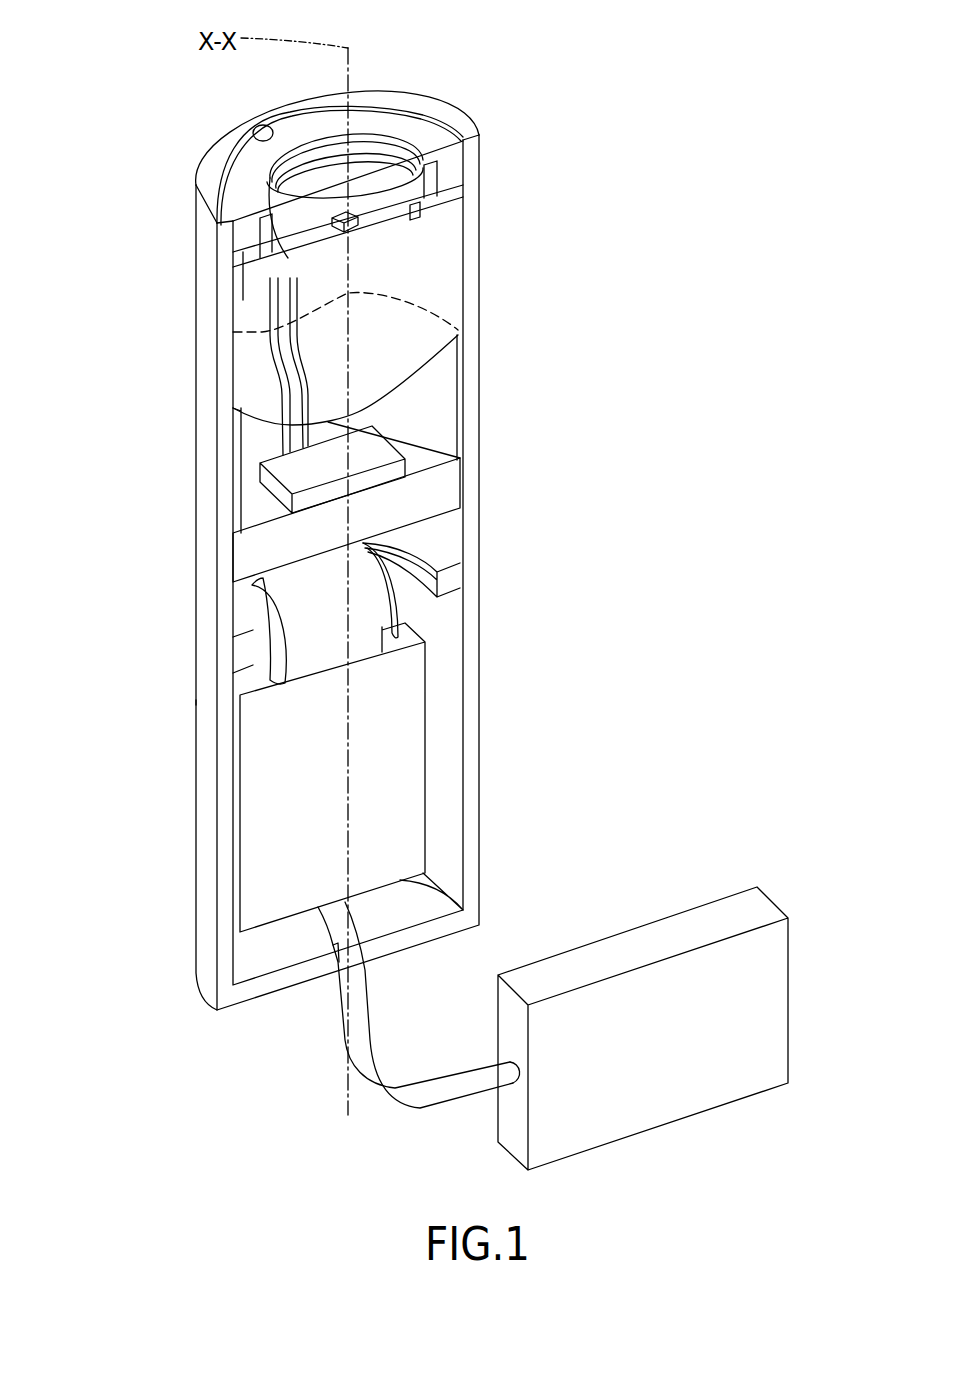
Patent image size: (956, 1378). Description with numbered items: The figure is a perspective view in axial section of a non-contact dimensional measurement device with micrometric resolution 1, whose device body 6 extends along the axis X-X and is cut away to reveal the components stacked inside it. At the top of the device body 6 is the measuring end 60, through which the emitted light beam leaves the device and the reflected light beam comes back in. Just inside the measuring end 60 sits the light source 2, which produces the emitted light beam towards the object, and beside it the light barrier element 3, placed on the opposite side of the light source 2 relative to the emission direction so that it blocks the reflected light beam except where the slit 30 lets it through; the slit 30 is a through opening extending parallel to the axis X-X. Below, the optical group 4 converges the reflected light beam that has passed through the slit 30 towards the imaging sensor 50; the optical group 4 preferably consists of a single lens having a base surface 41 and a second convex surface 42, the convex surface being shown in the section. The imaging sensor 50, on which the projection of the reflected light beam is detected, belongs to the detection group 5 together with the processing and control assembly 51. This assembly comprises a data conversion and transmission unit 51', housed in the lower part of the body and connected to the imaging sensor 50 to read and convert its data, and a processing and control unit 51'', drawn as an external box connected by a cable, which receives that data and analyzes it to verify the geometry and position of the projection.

The non-contact dimensional measurement device with micrometric resolution 1 is at (776, 252).
The light source 2 is at (333, 213).
The light barrier element 3 is at (422, 210).
The optical group 4 is at (253, 353).
The detection group 5 is at (624, 623).
The device body 6 is at (205, 640).
The slit 30 is at (413, 205).
The base surface 41 is at (430, 215).
The second convex surface 42 is at (423, 373).
The imaging sensor 50 is at (297, 471).
The processing and control assembly 51 is at (514, 896).
The data conversion and transmission unit 51' is at (418, 777).
The processing and control unit 51'' is at (643, 1000).
The measuring end 60 is at (182, 236).